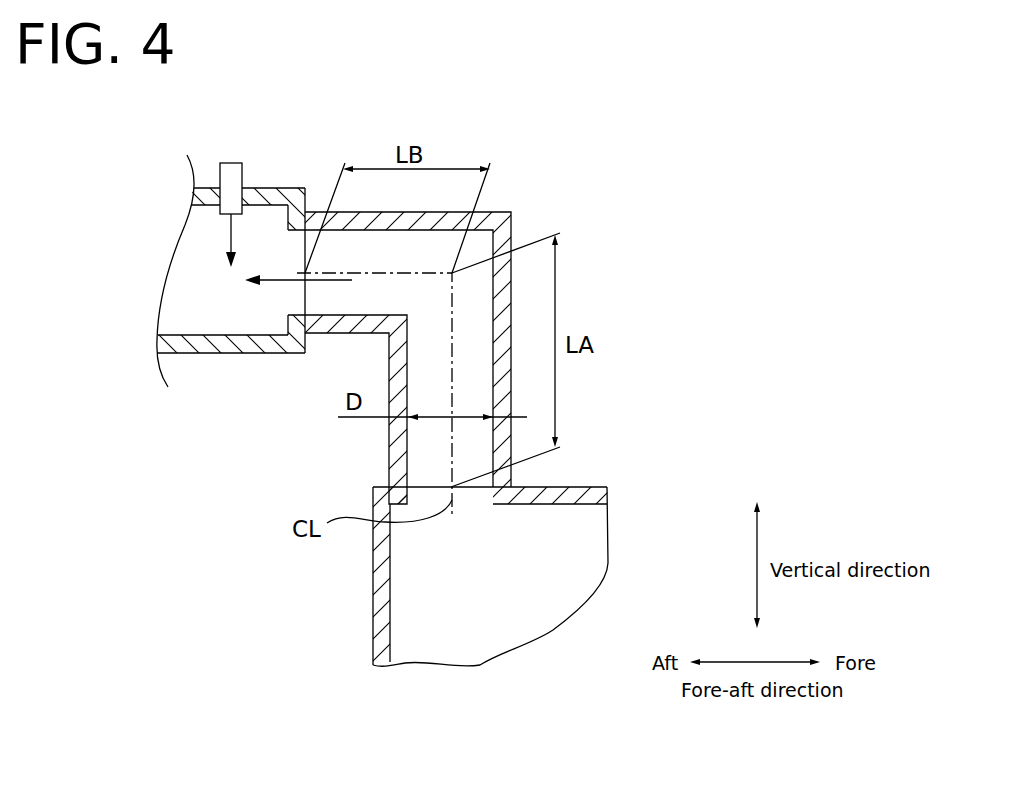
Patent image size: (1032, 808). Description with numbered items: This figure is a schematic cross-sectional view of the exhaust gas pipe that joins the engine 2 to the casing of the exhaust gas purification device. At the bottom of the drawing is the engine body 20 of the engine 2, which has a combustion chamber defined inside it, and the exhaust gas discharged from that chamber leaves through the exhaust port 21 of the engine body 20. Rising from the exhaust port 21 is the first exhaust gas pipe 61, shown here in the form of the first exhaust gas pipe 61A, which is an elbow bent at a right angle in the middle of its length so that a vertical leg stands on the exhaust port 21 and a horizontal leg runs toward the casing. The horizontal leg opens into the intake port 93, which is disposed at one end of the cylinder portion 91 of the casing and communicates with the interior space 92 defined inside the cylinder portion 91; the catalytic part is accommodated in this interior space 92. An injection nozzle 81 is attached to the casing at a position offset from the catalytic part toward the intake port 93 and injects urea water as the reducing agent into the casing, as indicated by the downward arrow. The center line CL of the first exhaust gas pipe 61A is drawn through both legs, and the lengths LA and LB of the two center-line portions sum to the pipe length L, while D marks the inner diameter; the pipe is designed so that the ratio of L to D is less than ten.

The engine 2 is at (450, 577).
The engine body 20 is at (373, 623).
The exhaust port 21 is at (408, 497).
The first exhaust gas pipe 61 is at (469, 298).
The first exhaust gas pipe 61A is at (497, 212).
The injection nozzle 81 is at (220, 179).
The cylinder portion 91 is at (212, 353).
The interior space 92 is at (222, 315).
The intake port 93 is at (305, 313).